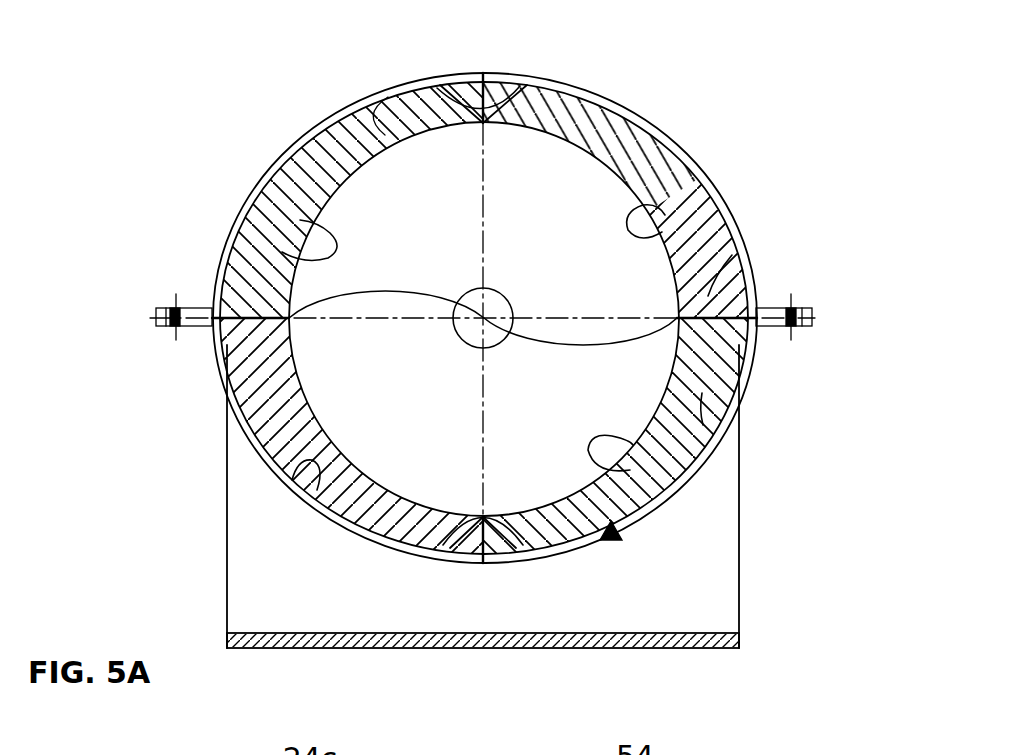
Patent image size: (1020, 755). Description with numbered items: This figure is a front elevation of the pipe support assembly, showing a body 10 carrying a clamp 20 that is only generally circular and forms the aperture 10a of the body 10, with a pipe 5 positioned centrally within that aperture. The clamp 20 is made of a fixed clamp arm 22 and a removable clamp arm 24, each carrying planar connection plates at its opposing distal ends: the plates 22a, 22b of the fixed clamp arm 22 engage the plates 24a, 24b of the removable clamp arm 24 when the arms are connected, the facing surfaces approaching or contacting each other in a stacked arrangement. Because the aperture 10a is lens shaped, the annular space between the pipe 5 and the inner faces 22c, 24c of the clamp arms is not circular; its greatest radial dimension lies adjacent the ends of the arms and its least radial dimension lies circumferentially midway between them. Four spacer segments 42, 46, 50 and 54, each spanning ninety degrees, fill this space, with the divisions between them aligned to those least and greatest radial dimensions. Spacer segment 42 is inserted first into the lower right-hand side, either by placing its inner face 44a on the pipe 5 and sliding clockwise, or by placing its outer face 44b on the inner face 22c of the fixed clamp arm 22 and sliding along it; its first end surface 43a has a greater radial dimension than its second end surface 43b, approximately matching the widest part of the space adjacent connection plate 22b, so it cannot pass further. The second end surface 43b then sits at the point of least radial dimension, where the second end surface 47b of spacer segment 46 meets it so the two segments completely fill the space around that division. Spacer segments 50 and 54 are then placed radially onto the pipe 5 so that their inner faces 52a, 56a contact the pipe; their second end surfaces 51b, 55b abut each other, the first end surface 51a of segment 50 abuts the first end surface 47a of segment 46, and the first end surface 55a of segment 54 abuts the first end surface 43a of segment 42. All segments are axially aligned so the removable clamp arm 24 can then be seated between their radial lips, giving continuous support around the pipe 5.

The pipe 5 is at (653, 140).
The body 10 is at (741, 612).
The aperture 10a is at (592, 237).
The clamp 20 is at (612, 540).
The fixed clamp arm 22 is at (272, 455).
The connection plate of fixed clamp arm 22a is at (158, 328).
The connection plate of fixed clamp arm 22b is at (810, 328).
The inner face of fixed clamp arm 22c is at (307, 482).
The removable clamp arm 24 is at (323, 122).
The connection plate of removable clamp arm 24a is at (158, 306).
The connection plate of removable clamp arm 24b is at (810, 306).
The inner face of removable clamp arm 24c is at (353, 113).
The spacer segment 42 is at (703, 425).
The first end surface of spacer segment 43a is at (722, 368).
The second end surface of spacer segment 43b is at (490, 523).
The inner face of spacer segment 44a is at (630, 470).
The outer face of spacer segment 44b is at (577, 545).
The spacer segment 46 is at (263, 397).
The first end surface of spacer segment 47a is at (247, 338).
The second end surface of spacer segment 47b is at (470, 520).
The spacer segment 50 is at (307, 178).
The first end surface of spacer segment 51a is at (242, 280).
The second end surface of spacer segment 51b is at (445, 105).
The inner face of spacer segment 52a is at (282, 252).
The spacer segment 54 is at (563, 108).
The first end surface of spacer segment 55a is at (707, 297).
The second end surface of spacer segment 55b is at (518, 88).
The inner face of spacer segment 56a is at (662, 232).